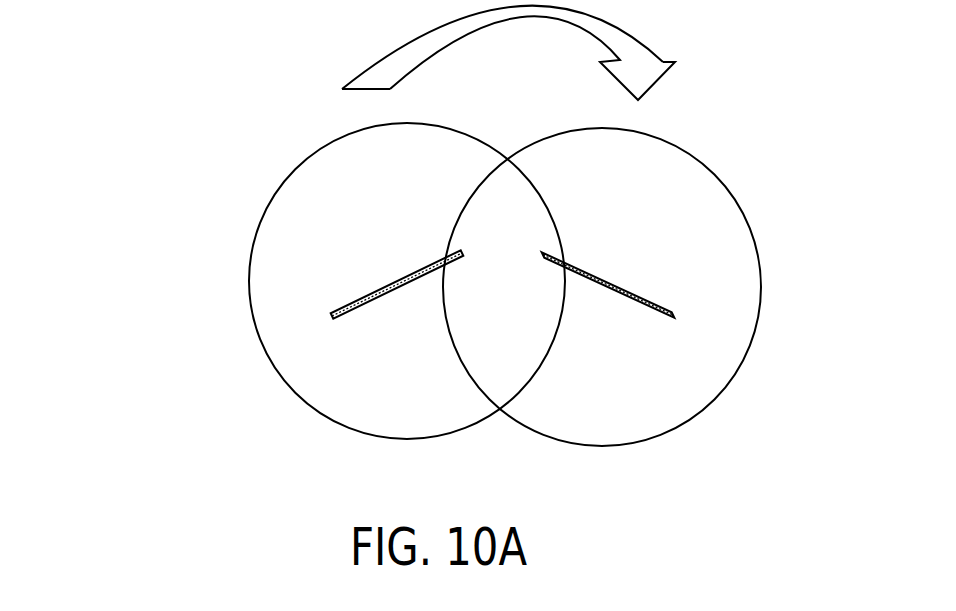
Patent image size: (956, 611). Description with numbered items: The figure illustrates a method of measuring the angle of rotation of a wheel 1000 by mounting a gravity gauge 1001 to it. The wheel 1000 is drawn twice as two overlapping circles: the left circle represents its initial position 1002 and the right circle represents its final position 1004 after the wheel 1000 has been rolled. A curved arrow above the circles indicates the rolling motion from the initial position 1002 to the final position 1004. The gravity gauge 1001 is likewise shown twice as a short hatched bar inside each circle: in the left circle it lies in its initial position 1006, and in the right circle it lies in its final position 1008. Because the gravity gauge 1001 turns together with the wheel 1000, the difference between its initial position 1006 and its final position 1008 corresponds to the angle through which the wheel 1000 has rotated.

The wheel 1000 is at (454, 284).
The gravity gauge 1001 is at (573, 258).
The initial position 1002 is at (278, 193).
The final position 1004 is at (733, 182).
The initial position 1006 is at (378, 293).
The final position 1008 is at (642, 293).